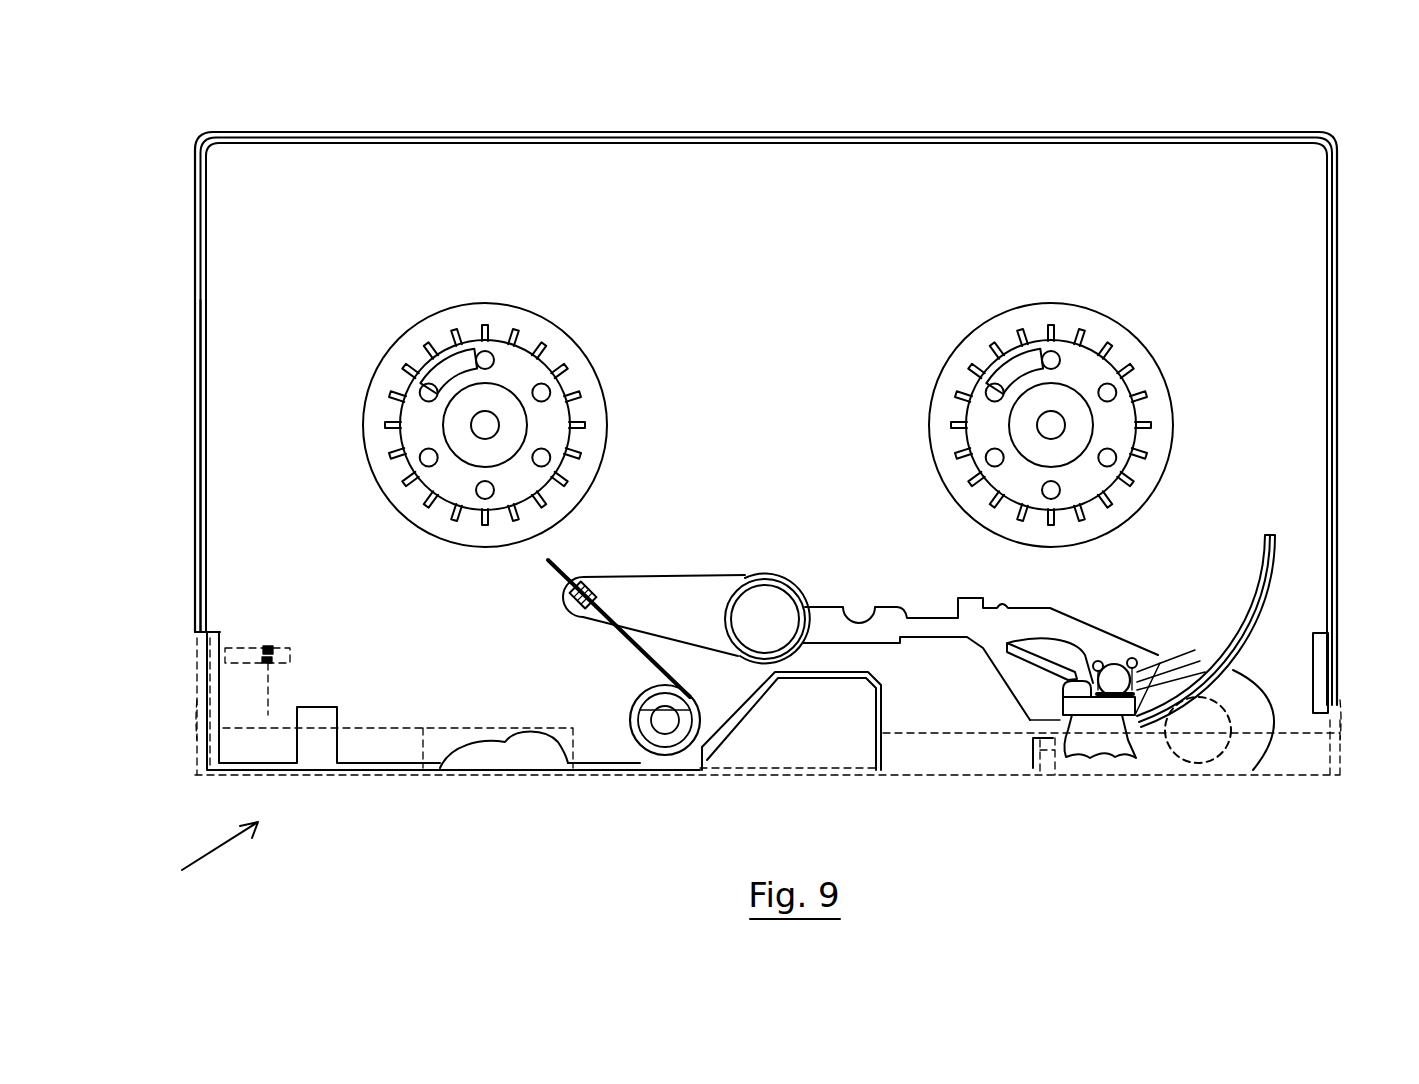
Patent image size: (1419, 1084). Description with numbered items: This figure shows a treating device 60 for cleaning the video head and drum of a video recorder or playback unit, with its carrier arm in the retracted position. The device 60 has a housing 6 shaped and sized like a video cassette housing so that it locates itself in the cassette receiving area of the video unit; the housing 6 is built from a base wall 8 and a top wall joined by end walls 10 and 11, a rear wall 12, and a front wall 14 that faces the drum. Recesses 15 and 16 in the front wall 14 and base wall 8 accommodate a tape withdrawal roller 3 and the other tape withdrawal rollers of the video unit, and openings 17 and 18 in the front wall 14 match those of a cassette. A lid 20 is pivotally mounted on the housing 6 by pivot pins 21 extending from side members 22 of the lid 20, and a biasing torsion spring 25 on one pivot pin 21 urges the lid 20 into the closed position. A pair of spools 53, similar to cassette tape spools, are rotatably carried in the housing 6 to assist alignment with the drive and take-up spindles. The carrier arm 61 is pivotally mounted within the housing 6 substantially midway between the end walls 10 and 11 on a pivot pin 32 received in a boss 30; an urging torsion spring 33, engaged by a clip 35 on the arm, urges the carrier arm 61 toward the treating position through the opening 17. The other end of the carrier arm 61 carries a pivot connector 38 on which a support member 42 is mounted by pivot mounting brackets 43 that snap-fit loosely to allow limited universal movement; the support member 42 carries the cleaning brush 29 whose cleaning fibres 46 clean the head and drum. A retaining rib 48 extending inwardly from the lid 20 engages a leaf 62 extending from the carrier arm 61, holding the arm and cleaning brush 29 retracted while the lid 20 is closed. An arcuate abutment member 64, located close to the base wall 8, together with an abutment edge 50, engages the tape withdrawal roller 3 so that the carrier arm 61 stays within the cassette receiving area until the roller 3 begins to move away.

The tape withdrawal roller 3 is at (1240, 764).
The housing 6 is at (1340, 393).
The base wall 8 is at (762, 172).
The end wall 10 is at (1338, 453).
The end wall 11 is at (193, 502).
The rear wall 12 is at (925, 131).
The front wall 14 is at (603, 767).
The recess 15 is at (510, 756).
The recess 16 is at (1253, 769).
The opening 17 is at (1035, 746).
The opening 18 is at (440, 768).
The lid 20 is at (763, 775).
The pivot pin 21 is at (290, 660).
The side member 22 is at (195, 700).
The biasing torsion spring 25 is at (272, 700).
The cleaning brush 29 is at (1128, 760).
The boss 30 is at (773, 581).
The pivot pin 32 is at (745, 620).
The urging torsion spring 33 is at (632, 642).
The clip 35 is at (598, 577).
The pivot connector 38 is at (1117, 664).
The support member 42 is at (1070, 697).
The pivot mounting bracket 43 is at (1135, 659).
The cleaning fibres 46 is at (1090, 748).
The retaining rib 48 is at (1043, 772).
The abutment edge 50 is at (1213, 667).
The spool 53 is at (577, 386).
The treating device 60 is at (199, 858).
The carrier arm 61 is at (906, 626).
The leaf 62 is at (1047, 719).
The arcuate abutment member 64 is at (1247, 644).